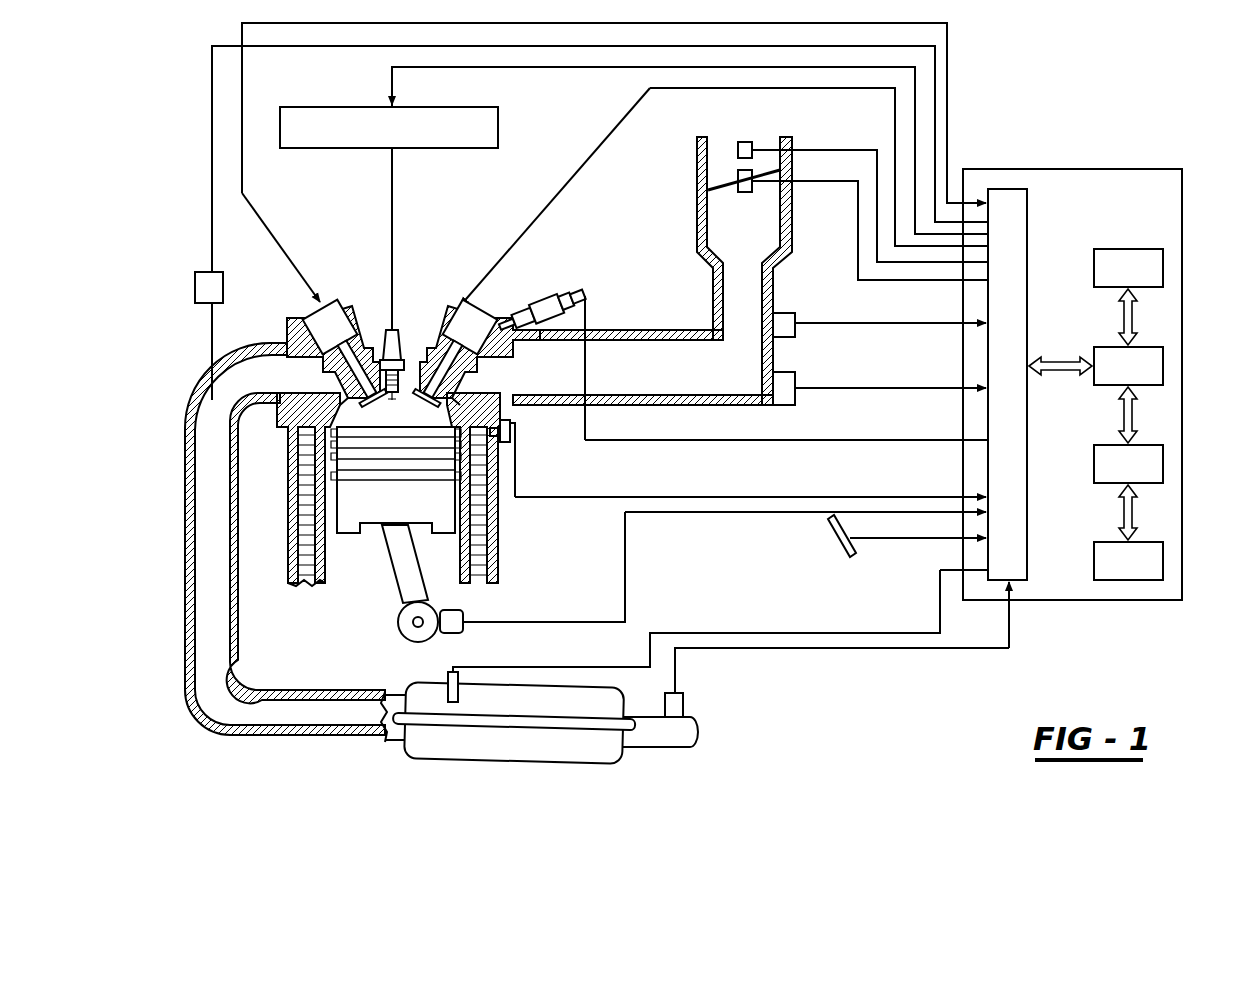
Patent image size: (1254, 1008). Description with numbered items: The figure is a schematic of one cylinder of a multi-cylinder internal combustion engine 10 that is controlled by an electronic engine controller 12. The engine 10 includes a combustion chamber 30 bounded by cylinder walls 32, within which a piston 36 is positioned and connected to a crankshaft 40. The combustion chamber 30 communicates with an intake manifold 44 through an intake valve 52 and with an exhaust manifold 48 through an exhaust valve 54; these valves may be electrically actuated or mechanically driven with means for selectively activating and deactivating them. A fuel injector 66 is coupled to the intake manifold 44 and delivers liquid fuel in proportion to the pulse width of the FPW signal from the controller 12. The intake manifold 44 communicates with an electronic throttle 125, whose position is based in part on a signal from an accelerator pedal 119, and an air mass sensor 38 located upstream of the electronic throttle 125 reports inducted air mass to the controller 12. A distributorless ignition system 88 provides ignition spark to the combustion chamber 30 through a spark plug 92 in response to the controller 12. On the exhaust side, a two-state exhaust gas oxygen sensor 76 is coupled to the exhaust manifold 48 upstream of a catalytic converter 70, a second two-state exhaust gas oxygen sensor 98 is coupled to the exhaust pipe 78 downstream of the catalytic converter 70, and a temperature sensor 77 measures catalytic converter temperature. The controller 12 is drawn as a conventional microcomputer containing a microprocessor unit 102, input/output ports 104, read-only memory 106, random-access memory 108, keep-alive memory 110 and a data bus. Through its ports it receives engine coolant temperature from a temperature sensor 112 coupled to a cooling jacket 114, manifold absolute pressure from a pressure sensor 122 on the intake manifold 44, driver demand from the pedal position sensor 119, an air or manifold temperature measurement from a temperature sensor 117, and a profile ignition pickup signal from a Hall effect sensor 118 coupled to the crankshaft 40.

The internal combustion engine 10 is at (287, 312).
The electronic engine controller 12 is at (1065, 169).
The combustion chamber 30 is at (392, 414).
The cylinder walls 32 is at (335, 586).
The piston 36 is at (396, 520).
The air mass sensor 38 is at (806, 187).
The crankshaft 40 is at (398, 629).
The intake manifold 44 is at (690, 381).
The exhaust manifold 48 is at (210, 433).
The intake valve 52 is at (450, 378).
The exhaust valve 54 is at (350, 376).
The fuel injector 66 is at (548, 296).
The catalytic converter 70 is at (472, 769).
The two-state exhaust gas oxygen sensor 76 is at (194, 284).
The temperature sensor 77 is at (448, 688).
The exhaust pipe 78 is at (682, 750).
The distributorless ignition system 88 is at (498, 122).
The spark plug 92 is at (388, 316).
The two-state exhaust gas oxygen sensor 98 is at (686, 702).
The microprocessor unit 102 is at (1100, 347).
The input/output ports 104 is at (1027, 210).
The read-only memory 106 is at (1130, 249).
The random-access memory 108 is at (1100, 445).
The keep-alive memory 110 is at (1100, 542).
The temperature sensor 112 is at (512, 424).
The cooling jacket 114 is at (303, 587).
The temperature sensor 117 is at (797, 314).
The Hall effect sensor 118 is at (463, 631).
The accelerator pedal 119 is at (830, 548).
The pressure sensor 122 is at (796, 375).
The electronic throttle 125 is at (720, 178).